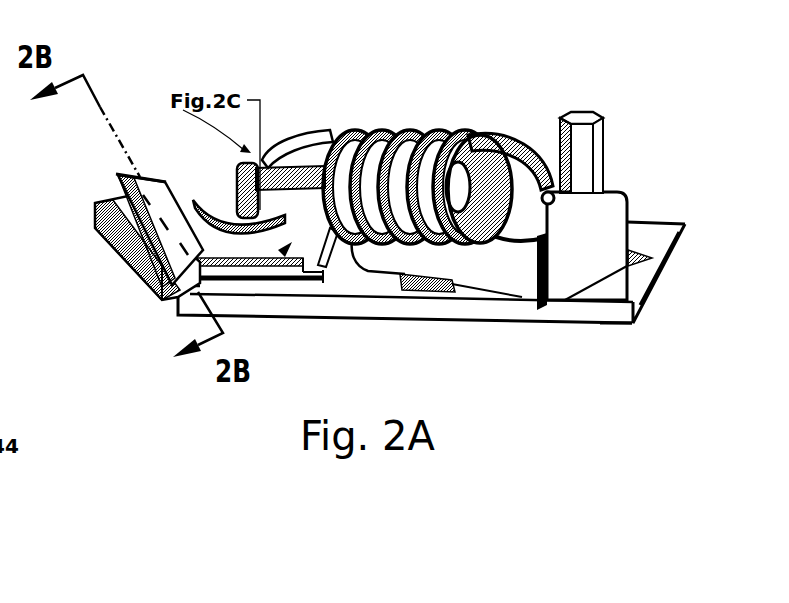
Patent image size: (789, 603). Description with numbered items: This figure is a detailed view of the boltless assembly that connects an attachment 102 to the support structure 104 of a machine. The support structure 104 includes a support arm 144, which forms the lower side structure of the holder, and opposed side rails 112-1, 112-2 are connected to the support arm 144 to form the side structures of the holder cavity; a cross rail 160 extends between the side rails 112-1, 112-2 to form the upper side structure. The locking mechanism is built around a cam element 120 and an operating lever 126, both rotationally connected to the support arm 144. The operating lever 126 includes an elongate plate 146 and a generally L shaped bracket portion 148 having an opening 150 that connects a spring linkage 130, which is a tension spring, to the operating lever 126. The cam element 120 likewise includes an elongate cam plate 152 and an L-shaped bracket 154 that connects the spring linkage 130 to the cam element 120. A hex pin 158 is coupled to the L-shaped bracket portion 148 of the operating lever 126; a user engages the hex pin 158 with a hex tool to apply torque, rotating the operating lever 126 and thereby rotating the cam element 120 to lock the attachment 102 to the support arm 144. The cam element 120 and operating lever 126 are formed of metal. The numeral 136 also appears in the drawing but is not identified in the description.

The attachment 102 is at (190, 312).
The support structure 104 is at (683, 288).
The side rail 112-1 is at (140, 277).
The side rail 112-2 is at (113, 202).
The cam element 120 is at (222, 198).
The operating lever 126 is at (452, 255).
The spring linkage 130 is at (409, 128).
The spring support 136 is at (395, 297).
The support arm 144 is at (612, 316).
The elongate plate 146 is at (502, 280).
The L shaped bracket portion 148 is at (642, 213).
The opening 150 is at (545, 168).
The elongate cam plate 152 is at (314, 130).
The L-shaped bracket 154 is at (168, 97).
The hex pin 158 is at (583, 122).
The cross rail 160 is at (121, 176).